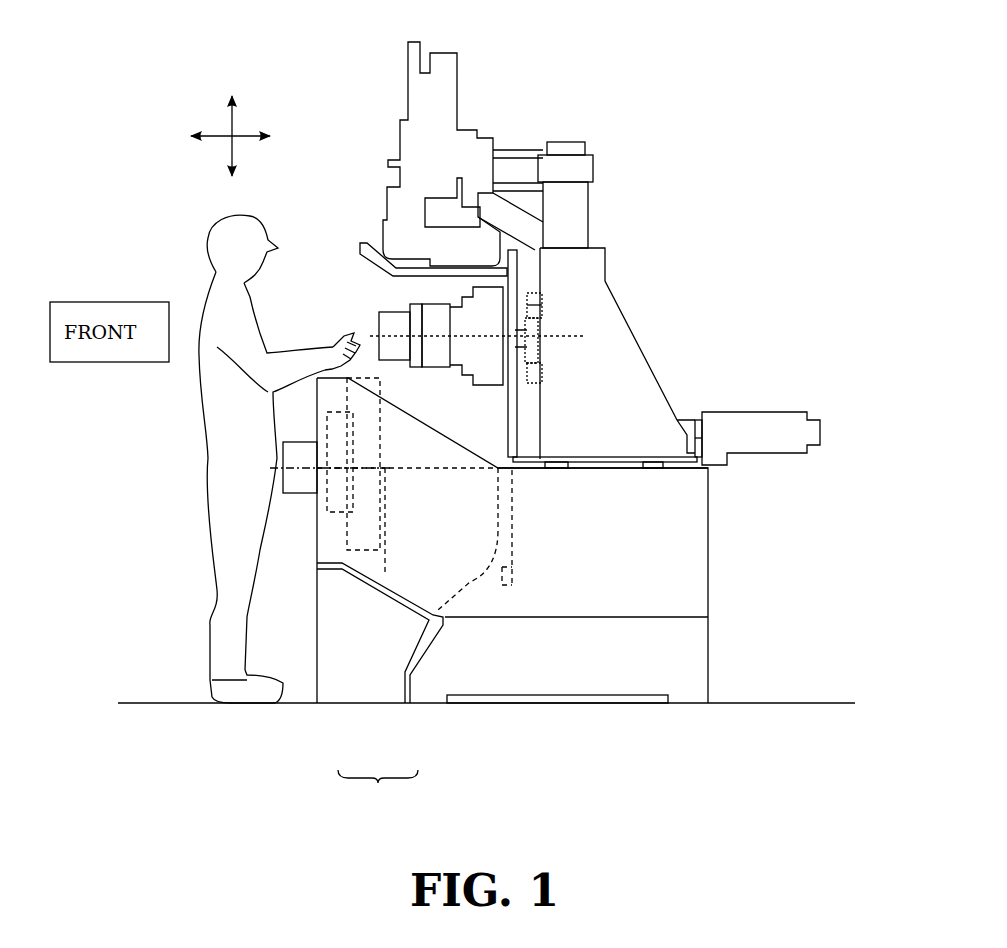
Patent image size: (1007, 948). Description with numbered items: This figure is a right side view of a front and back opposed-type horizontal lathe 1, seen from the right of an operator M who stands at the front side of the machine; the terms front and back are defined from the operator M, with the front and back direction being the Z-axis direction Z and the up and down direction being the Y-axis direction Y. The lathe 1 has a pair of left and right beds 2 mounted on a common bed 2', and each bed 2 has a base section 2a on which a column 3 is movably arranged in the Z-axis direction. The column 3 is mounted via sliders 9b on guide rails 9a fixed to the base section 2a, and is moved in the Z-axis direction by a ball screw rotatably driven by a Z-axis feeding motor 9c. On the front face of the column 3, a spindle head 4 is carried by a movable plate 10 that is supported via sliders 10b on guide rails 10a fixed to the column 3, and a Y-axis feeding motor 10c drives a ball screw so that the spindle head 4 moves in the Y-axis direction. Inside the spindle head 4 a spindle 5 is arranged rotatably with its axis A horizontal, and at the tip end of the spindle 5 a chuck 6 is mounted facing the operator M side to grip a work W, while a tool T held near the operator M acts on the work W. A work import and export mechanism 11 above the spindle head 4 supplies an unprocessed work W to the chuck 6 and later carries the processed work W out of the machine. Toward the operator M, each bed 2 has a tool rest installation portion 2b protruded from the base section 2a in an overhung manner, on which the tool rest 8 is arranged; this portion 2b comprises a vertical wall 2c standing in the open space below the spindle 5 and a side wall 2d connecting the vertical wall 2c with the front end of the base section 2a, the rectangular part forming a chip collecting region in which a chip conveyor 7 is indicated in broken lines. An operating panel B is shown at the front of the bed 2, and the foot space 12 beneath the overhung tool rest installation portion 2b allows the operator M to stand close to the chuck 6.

The horizontal lathe 1 is at (683, 125).
The bed 2 is at (549, 540).
The common bed 2' is at (615, 671).
The base section 2a is at (686, 535).
The tool rest installation portion 2b is at (378, 793).
The vertical wall 2c is at (322, 553).
The side wall 2d is at (415, 575).
The column 3 is at (650, 362).
The spindle head 4 is at (492, 378).
The spindle 5 is at (458, 370).
The chuck 6 is at (432, 367).
The chip conveyor 7 is at (472, 588).
The tool rest 8 is at (298, 513).
The guide rails 9a is at (605, 457).
The sliders 9b is at (560, 468).
The Z-axis feeding motor 9c is at (752, 412).
The movable plate 10 is at (515, 393).
The guide rails 10a is at (537, 303).
The sliders 10b is at (540, 398).
The Y-axis feeding motor 10c is at (566, 142).
The work import and export mechanism 11 is at (389, 89).
The foot space 12 is at (331, 695).
The spindle axis A is at (580, 334).
The operating panel B is at (296, 467).
The operator M is at (203, 305).
The tool T is at (345, 338).
The work W is at (380, 312).
The Y-axis direction Y is at (230, 121).
The Z-axis direction Z is at (218, 138).